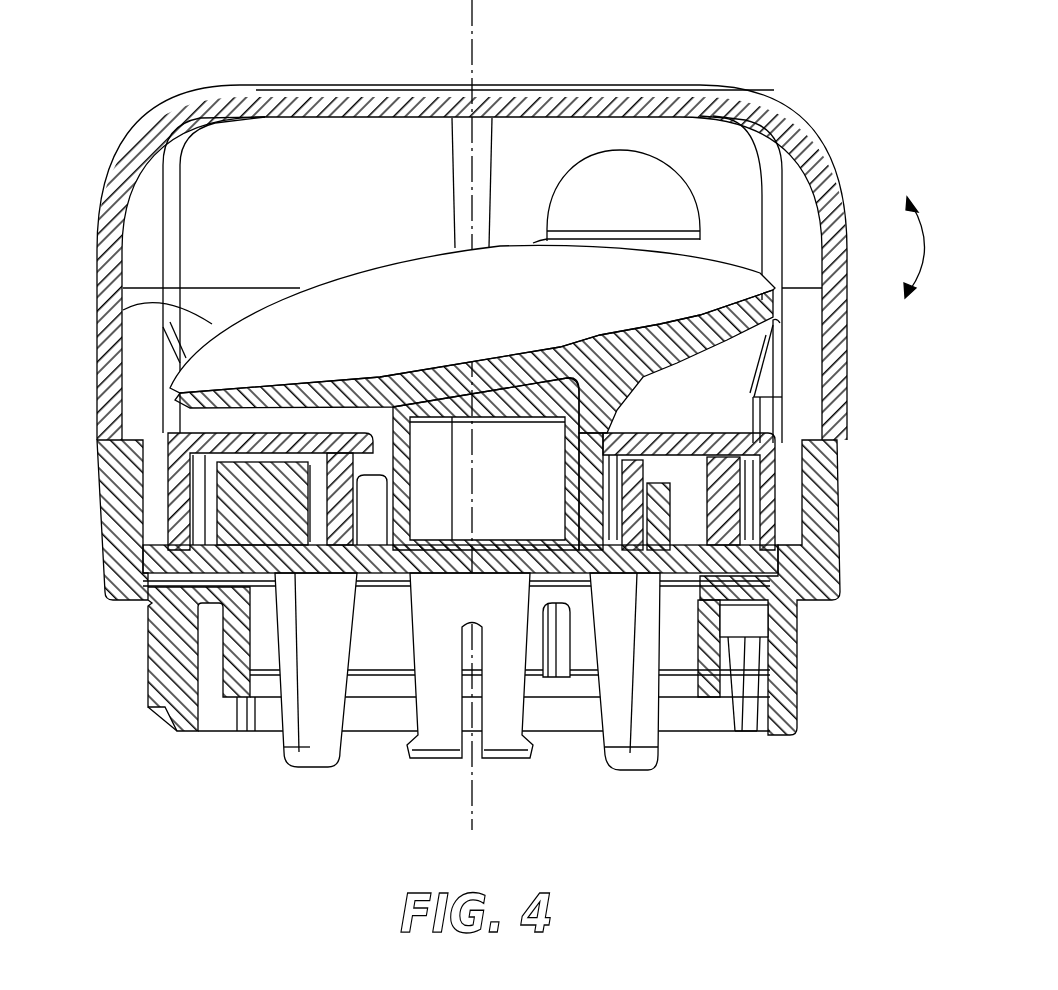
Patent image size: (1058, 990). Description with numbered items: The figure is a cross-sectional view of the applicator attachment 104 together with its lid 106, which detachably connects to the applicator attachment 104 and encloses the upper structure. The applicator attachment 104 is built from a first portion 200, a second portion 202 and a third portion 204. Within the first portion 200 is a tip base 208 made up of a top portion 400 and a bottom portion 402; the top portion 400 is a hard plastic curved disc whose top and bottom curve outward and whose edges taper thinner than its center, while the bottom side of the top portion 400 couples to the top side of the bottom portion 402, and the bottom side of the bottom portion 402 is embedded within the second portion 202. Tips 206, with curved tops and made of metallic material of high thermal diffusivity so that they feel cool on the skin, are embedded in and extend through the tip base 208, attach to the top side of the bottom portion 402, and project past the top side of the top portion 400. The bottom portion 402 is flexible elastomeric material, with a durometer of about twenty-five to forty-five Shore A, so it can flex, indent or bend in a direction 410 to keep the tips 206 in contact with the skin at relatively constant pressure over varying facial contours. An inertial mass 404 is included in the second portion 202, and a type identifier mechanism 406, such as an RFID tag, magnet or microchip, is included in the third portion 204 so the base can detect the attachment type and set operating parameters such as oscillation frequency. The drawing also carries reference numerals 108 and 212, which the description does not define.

The applicator attachment 104 is at (141, 58).
The lid 106 is at (797, 117).
The central axis 108 is at (474, 46).
The first portion 200 is at (762, 262).
The second portion 202 is at (755, 433).
The third portion 204 is at (837, 563).
The tips 206 is at (626, 163).
The tip base 208 is at (160, 300).
The snap legs 212 is at (508, 760).
The top portion 400 is at (422, 260).
The bottom portion 402 is at (660, 364).
The inertial mass 404 is at (223, 527).
The type identifier mechanism 406 is at (757, 625).
The direction 410 is at (927, 250).